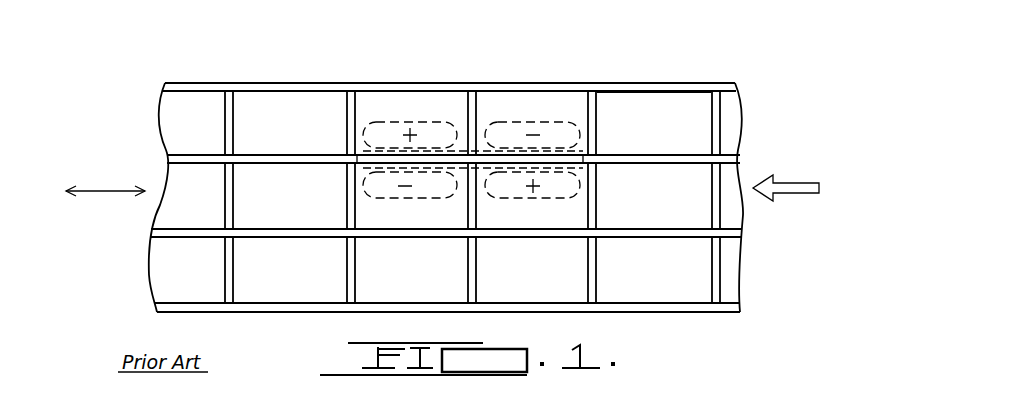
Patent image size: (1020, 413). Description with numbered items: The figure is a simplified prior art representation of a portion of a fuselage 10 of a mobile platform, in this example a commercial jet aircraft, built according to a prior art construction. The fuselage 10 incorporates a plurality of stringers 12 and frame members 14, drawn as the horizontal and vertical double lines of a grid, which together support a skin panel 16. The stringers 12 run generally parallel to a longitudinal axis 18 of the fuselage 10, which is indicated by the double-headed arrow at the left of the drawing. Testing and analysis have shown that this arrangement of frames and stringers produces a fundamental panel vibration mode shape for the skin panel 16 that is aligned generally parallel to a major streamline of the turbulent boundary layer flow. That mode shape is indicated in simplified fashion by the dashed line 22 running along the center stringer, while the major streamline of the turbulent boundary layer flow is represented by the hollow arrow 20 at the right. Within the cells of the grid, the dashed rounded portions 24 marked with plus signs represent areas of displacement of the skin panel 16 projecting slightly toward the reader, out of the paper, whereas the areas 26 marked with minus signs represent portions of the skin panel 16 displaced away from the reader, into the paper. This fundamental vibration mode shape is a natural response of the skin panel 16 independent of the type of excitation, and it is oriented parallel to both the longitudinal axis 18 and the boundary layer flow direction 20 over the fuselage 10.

The fuselage 10 is at (160, 70).
The stringers 12 is at (433, 234).
The frame members 14 is at (717, 268).
The skin panel 16 is at (623, 107).
The longitudinal axis 18 is at (108, 192).
The arrow representing the major streamline of turbulent boundary layer flow 20 is at (792, 186).
The dashed line 22 is at (585, 158).
The portions 24 is at (366, 128).
The areas 26 is at (523, 121).